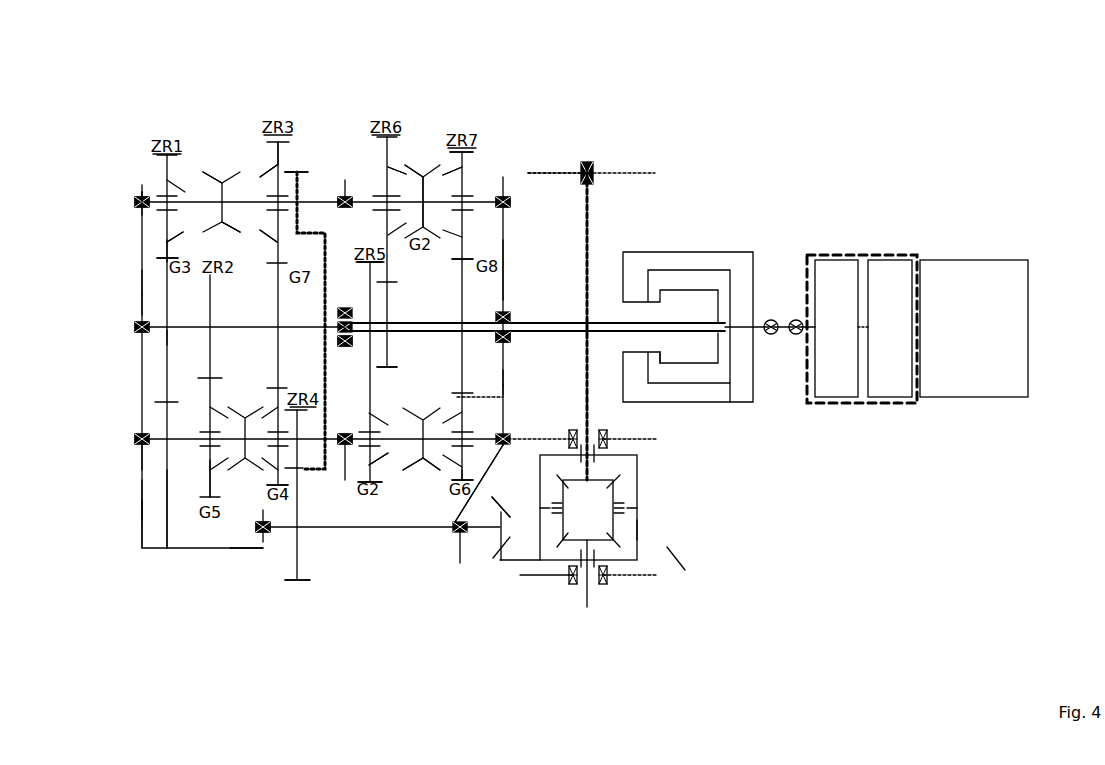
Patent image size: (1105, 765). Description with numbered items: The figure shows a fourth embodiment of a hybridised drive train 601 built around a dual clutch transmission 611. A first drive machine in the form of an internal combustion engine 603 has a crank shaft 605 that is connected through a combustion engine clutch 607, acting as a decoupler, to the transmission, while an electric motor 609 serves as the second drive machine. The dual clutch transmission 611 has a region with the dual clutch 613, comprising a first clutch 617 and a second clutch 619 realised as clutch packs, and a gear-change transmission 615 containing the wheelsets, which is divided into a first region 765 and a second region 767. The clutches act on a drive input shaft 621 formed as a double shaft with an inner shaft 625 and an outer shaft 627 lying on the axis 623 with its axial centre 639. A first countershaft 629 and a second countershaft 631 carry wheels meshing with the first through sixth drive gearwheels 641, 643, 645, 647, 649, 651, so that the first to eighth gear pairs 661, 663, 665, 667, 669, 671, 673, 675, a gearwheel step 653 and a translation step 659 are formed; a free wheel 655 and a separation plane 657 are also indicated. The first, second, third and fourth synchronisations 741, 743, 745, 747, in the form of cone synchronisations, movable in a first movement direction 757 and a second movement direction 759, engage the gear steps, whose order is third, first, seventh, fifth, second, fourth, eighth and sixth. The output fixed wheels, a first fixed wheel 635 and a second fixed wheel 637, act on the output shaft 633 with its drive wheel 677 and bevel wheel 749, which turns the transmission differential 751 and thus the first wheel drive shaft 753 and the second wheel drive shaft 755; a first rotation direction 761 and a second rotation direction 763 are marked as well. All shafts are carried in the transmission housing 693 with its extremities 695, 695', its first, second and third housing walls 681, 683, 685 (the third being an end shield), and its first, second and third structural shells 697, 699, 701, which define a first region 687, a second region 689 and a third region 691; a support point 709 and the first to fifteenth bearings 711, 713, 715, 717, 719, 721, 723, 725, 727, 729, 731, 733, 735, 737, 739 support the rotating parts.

The drive train 601 is at (598, 140).
The drive machine 603 is at (961, 332).
The crank shaft of the internal combustion engine 605 is at (917, 330).
The combustion engine clutch 607 is at (877, 332).
The drive machine 609 is at (823, 332).
The dual clutch transmission 611 is at (442, 230).
The dual clutch 613 is at (678, 232).
The gear-change transmission 615 is at (304, 124).
The first clutch 617 is at (730, 383).
The second clutch 619 is at (692, 368).
The drive input shaft 621 is at (500, 377).
The axis 623 is at (167, 288).
The inner shaft 625 is at (205, 300).
The outer shaft 627 is at (505, 200).
The first countershaft 629 is at (390, 167).
The second countershaft 631 is at (200, 500).
The output shaft 633 is at (374, 483).
The first fixed wheel 635 is at (303, 165).
The second fixed wheel 637 is at (268, 500).
The axial centre 639 is at (363, 258).
The first drive gearwheel 641 is at (168, 480).
The second drive gearwheel 643 is at (250, 235).
The third drive gearwheel 645 is at (258, 175).
The fourth drive gearwheel 647 is at (333, 182).
The fifth drive gearwheel 649 is at (423, 172).
The sixth drive gearwheel 651 is at (461, 112).
The gearwheel step 653 is at (172, 230).
The free wheel 655 is at (141, 190).
The separation plane 657 is at (348, 480).
The translation step 659 is at (485, 500).
The first gear pair 661 is at (188, 228).
The second gear pair 663 is at (198, 378).
The third gear pair 665 is at (267, 388).
The fourth gear pair 667 is at (285, 248).
The fifth gear pair 669 is at (403, 470).
The sixth gear pair 671 is at (366, 258).
The seventh gear pair 673 is at (590, 398).
The eighth gear pair 675 is at (480, 255).
The drive wheel 677 is at (190, 310).
The first housing wall 681 is at (500, 388).
The second housing wall 683 is at (142, 535).
The third housing wall 685 is at (345, 476).
The first region 687 is at (468, 572).
The second region 689 is at (140, 172).
The third region 691 is at (331, 185).
The transmission housing 693 is at (130, 520).
The extremity of a transmission housing 695 is at (159, 370).
The extremity of a transmission housing 695' is at (578, 562).
The first structural shell 697 is at (503, 399).
The second structural shell 699 is at (142, 432).
The third structural shell 701 is at (370, 484).
The support point 709 is at (134, 327).
The first bearing 711 is at (136, 200).
The second bearing 713 is at (338, 206).
The third bearing 715 is at (510, 203).
The fourth bearing 717 is at (136, 323).
The fifth bearing 719 is at (397, 367).
The sixth bearing 721 is at (353, 345).
The seventh bearing 723 is at (508, 339).
The eighth bearing 725 is at (136, 443).
The ninth bearing 727 is at (297, 582).
The tenth bearing 729 is at (510, 542).
The eleventh bearing 731 is at (263, 542).
The twelfth bearing 733 is at (445, 470).
The thirteenth bearing 735 is at (603, 586).
The fourteenth bearing 737 is at (637, 535).
The fifteenth bearing 739 is at (583, 168).
The first synchronisation 741 is at (203, 172).
The second synchronisation 743 is at (410, 168).
The third synchronisation 745 is at (247, 550).
The fourth synchronisation 747 is at (423, 472).
The bevel wheel 749 is at (500, 512).
The transmission differential 751 is at (683, 556).
The first wheel drive shaft 753 is at (587, 605).
The second wheel drive shaft 755 is at (590, 210).
The first movement direction 757 is at (182, 255).
The second movement direction 759 is at (239, 253).
The first rotation direction 761 is at (771, 319).
The second rotation direction 763 is at (796, 319).
The first region 765 is at (228, 356).
The second region 767 is at (423, 356).